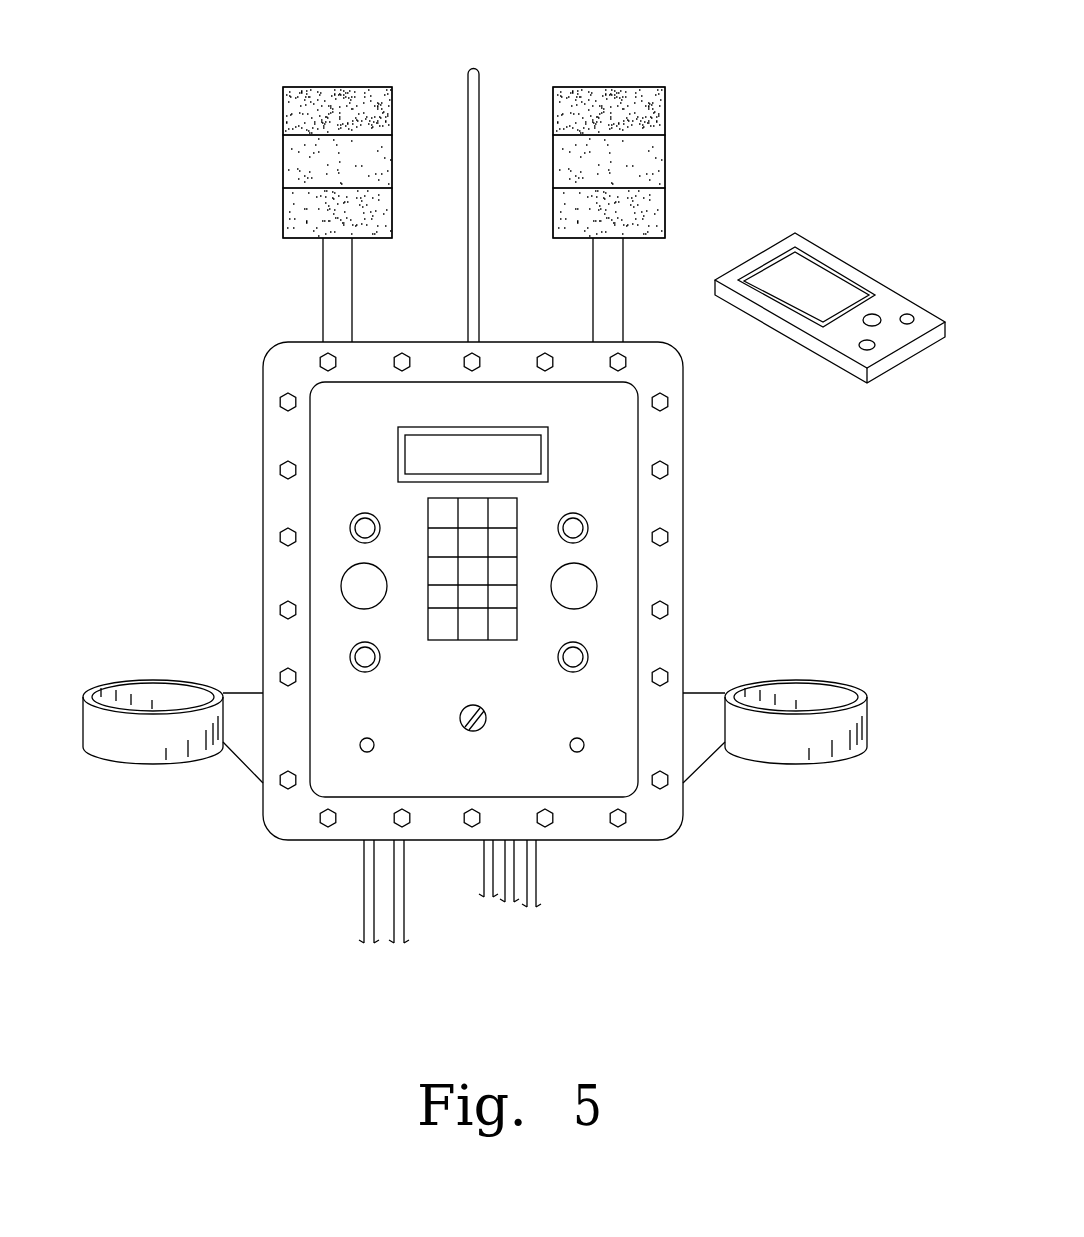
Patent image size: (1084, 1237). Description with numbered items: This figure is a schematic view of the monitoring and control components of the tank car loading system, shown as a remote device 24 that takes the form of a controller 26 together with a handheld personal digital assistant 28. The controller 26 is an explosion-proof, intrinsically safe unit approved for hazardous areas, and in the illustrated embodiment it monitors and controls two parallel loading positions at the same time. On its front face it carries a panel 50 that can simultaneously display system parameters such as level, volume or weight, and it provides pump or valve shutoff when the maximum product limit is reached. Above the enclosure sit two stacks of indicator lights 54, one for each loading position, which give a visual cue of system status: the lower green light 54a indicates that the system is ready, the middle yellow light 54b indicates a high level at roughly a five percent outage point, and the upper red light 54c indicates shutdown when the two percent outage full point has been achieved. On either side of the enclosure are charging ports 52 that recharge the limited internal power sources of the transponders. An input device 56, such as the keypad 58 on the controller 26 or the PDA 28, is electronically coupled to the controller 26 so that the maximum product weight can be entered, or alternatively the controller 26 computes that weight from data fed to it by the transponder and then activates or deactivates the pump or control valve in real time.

The remote device 24 is at (243, 315).
The controller 26 is at (673, 428).
The personal digital assistant (PDA) 28 is at (895, 305).
The panel 50 is at (537, 448).
The charging ports 52 is at (132, 755).
The indicator lights 54 is at (339, 80).
The lower (green) light 54a is at (283, 200).
The middle (yellow) light 54b is at (283, 148).
The upper (red) light 54c is at (283, 100).
The input device 56 is at (612, 570).
The keypad 58 is at (428, 574).